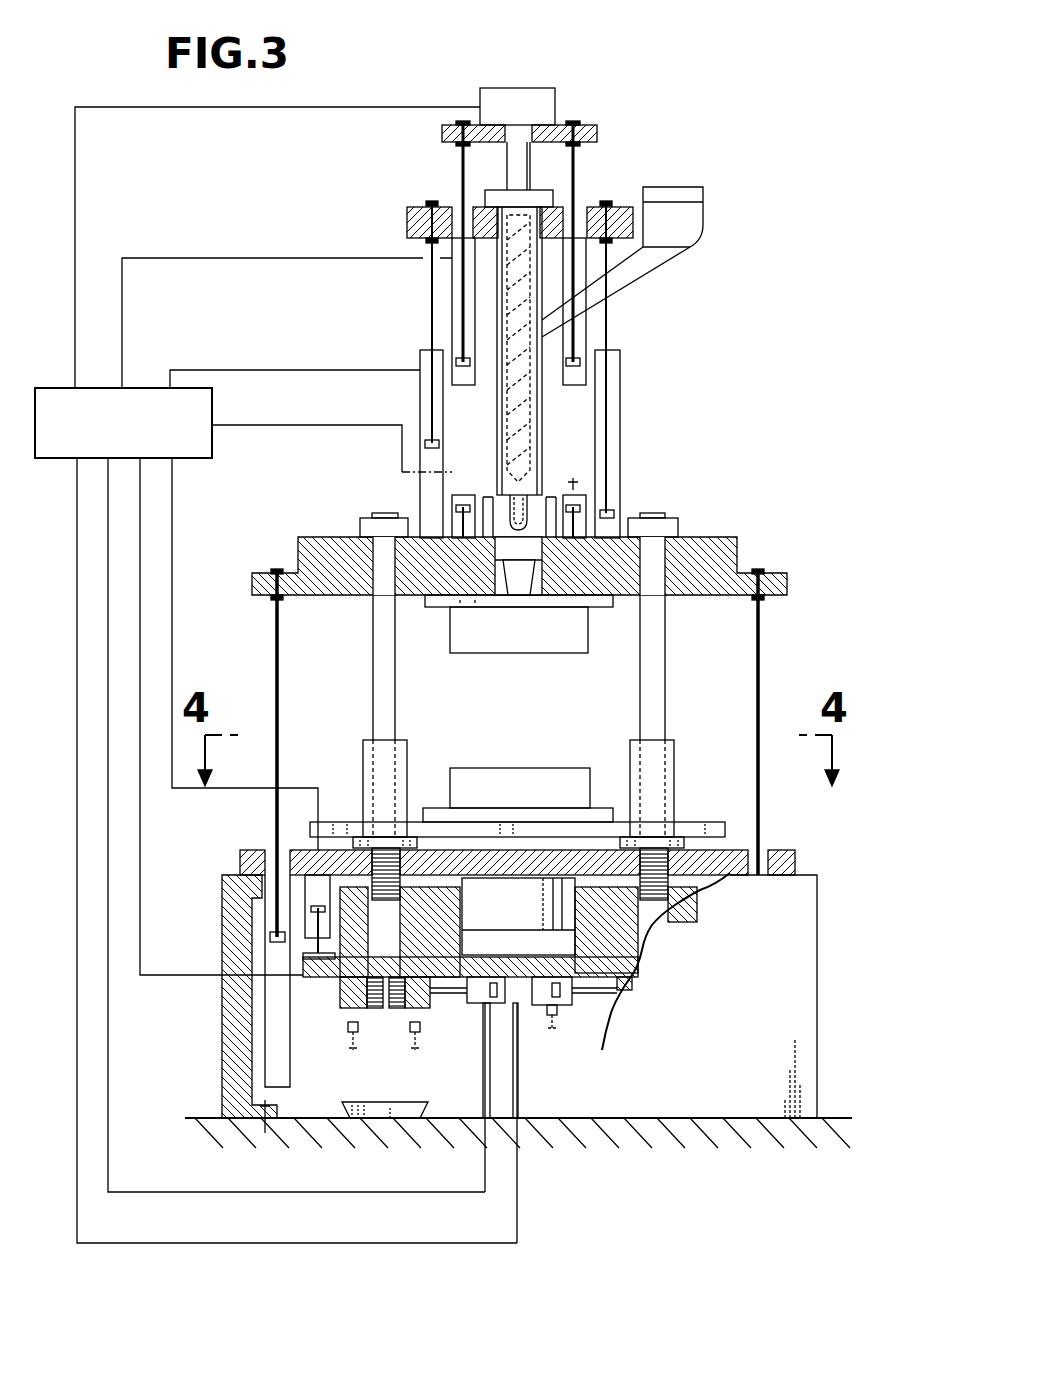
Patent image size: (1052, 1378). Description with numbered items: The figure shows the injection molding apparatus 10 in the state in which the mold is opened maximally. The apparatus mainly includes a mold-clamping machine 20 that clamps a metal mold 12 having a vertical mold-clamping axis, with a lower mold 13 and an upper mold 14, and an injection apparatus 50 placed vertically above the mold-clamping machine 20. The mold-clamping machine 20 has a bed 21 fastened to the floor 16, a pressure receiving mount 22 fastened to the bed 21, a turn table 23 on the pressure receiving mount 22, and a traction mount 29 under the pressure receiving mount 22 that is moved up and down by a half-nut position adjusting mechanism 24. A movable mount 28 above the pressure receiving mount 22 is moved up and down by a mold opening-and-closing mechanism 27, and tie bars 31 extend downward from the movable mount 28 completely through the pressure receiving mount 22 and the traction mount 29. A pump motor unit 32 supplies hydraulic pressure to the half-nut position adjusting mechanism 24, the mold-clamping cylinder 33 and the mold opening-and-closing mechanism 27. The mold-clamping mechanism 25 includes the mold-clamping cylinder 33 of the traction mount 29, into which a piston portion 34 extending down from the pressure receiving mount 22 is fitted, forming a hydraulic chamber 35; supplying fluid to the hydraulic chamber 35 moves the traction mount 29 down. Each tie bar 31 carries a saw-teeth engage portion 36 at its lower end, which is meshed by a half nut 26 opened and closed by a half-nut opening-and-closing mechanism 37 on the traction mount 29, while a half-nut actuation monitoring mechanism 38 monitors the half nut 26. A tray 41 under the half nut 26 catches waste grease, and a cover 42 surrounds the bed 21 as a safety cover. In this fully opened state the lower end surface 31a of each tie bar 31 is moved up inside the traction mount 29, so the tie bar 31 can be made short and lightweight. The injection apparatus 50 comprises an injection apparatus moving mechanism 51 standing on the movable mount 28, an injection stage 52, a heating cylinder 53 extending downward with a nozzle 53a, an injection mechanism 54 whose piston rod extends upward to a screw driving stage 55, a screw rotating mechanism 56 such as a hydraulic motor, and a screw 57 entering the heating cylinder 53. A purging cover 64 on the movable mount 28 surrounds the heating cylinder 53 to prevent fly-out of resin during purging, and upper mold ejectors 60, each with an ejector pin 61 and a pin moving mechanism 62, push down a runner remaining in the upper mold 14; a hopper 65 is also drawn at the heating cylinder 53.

The injection molding apparatus 10 is at (718, 82).
The metal mold 12 is at (232, 710).
The lower mold 13 is at (490, 780).
The upper mold 14 is at (474, 636).
The floor 16 is at (840, 1118).
The mold-clamping machine 20 is at (875, 540).
The bed 21 is at (218, 1014).
The pressure receiving mount 22 is at (772, 858).
The turn table 23 is at (700, 822).
The half-nut position adjusting mechanism 24 is at (310, 920).
The mold-clamping mechanism 25 is at (648, 993).
The half nut 26 is at (345, 992).
The mold opening-and-closing mechanism 27 is at (262, 1084).
The movable mount 28 is at (710, 548).
The traction mount 29 is at (597, 937).
The tie bar 31 is at (385, 666).
The lower end surface 31a is at (386, 900).
The pump motor unit 32 is at (57, 387).
The mold-clamping cylinder 33 is at (574, 990).
The piston portion 34 is at (577, 905).
The hydraulic chamber 35 is at (521, 945).
The engage portion 36 is at (388, 846).
The half-nut opening-and-closing mechanism 37 is at (518, 1004).
The half-nut actuation monitoring mechanism 38 is at (345, 1032).
The tray 41 is at (388, 1120).
The cover 42 is at (752, 1013).
The injection apparatus 50 is at (875, 80).
The injection apparatus moving mechanism 51 is at (420, 362).
The injection stage 52 is at (624, 207).
The heating cylinder 53 is at (543, 458).
The nozzle 53a is at (519, 545).
The injection mechanism 54 is at (452, 272).
The screw driving stage 55 is at (450, 142).
The screw rotating mechanism 56 is at (517, 104).
The screw 57 is at (520, 416).
The upper mold ejector 60 is at (305, 468).
The ejector pin 61 is at (397, 570).
The pin moving mechanism 62 is at (452, 506).
The purging cover 64 is at (556, 500).
The hopper 65 is at (680, 232).